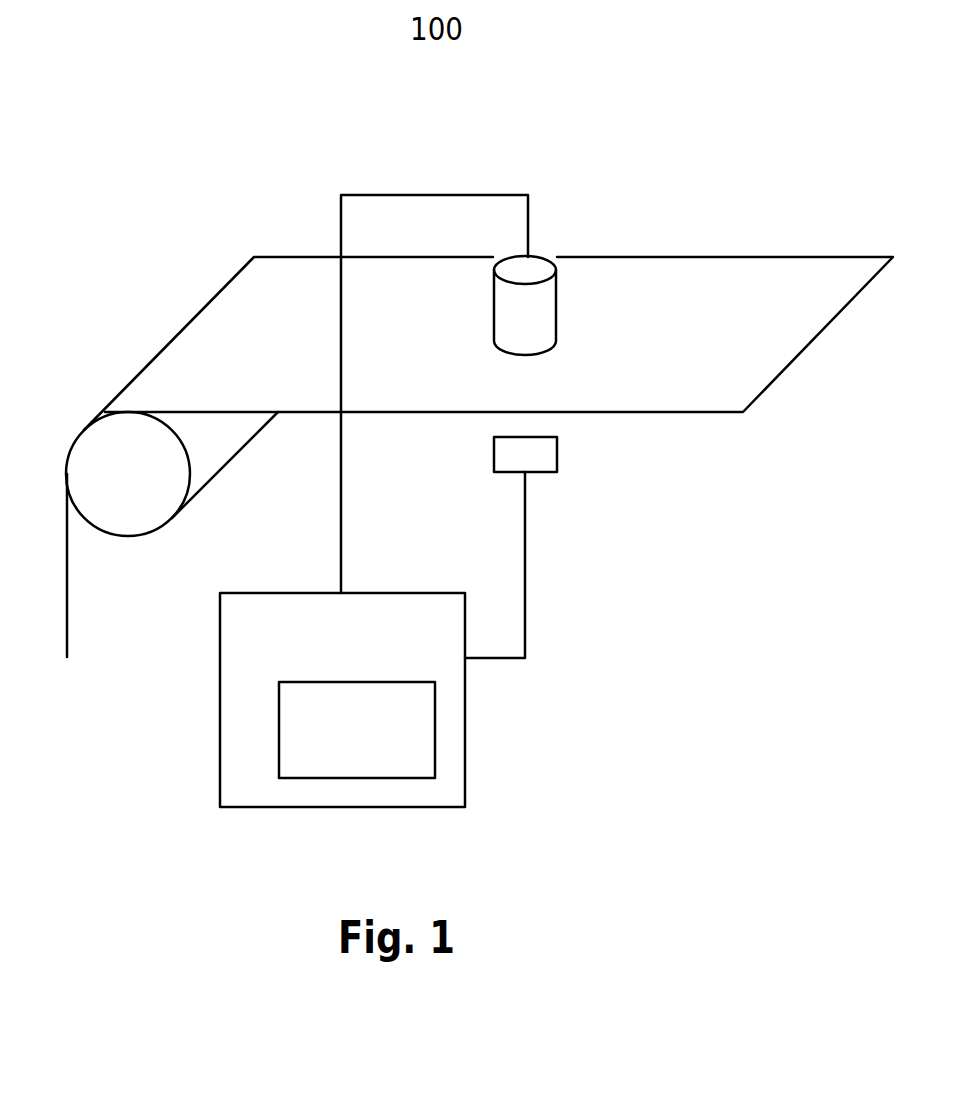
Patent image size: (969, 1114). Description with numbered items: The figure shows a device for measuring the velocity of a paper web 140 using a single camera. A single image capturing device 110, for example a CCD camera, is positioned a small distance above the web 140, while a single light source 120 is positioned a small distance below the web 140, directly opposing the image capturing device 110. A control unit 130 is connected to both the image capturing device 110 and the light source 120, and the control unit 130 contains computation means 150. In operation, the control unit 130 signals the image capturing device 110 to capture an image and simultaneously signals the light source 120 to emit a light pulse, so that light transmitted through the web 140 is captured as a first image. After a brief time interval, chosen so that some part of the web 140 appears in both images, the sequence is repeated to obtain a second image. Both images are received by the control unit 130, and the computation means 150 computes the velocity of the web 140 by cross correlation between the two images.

The image capturing device 110 is at (552, 275).
The light source 120 is at (557, 453).
The control unit 130 is at (217, 722).
The paper web 140 is at (250, 352).
The computation means 150 is at (357, 730).